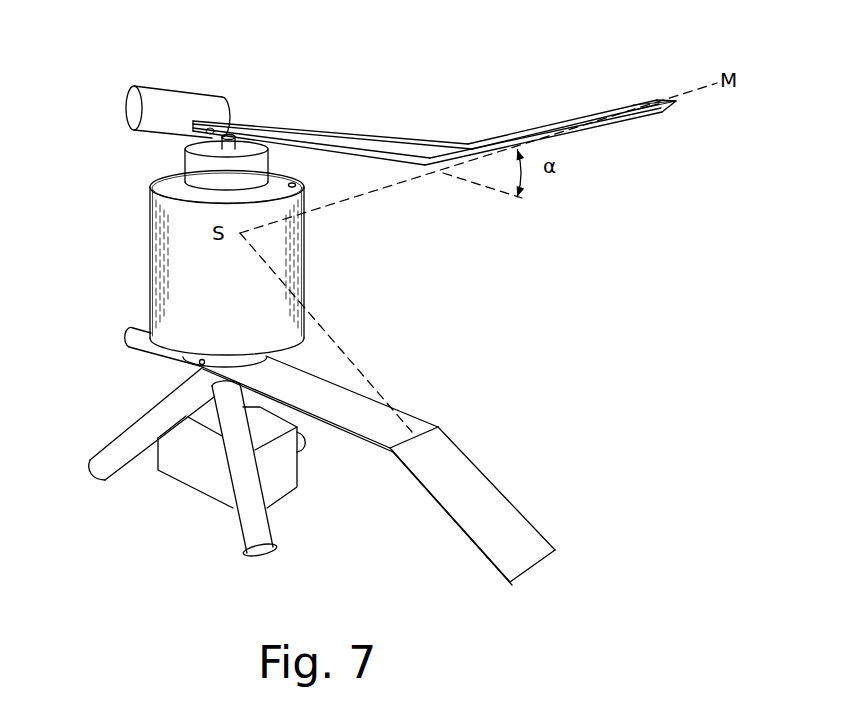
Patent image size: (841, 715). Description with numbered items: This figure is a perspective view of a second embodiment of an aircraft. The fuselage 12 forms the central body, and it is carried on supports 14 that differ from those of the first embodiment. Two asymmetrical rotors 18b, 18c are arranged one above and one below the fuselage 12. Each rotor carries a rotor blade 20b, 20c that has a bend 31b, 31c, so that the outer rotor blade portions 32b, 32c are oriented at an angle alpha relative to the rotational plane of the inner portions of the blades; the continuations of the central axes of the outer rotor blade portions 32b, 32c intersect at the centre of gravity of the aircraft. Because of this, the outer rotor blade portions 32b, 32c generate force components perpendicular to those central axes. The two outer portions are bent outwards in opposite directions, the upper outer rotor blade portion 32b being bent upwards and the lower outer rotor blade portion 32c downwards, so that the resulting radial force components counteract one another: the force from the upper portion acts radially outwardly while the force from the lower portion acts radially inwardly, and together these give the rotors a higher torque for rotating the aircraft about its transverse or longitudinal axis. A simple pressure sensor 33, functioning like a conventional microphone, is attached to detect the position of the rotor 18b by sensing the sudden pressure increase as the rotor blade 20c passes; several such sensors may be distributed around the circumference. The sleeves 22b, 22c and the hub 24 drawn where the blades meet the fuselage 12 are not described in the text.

The fuselage 12 is at (297, 240).
The supports 14 is at (115, 458).
The rotor 18b is at (434, 114).
The rotor 18c is at (390, 436).
The rotor blade 20b is at (382, 137).
The rotor blade 20c is at (390, 422).
The first arm sleeve 22b is at (151, 96).
The second arm sleeve 22c is at (134, 329).
The hub 24 is at (203, 168).
The bend 31b is at (503, 115).
The bend 31c is at (358, 464).
The outer rotor blade portion 32b is at (630, 113).
The outer rotor blade portion 32c is at (517, 528).
The pressure sensor 33 is at (296, 185).